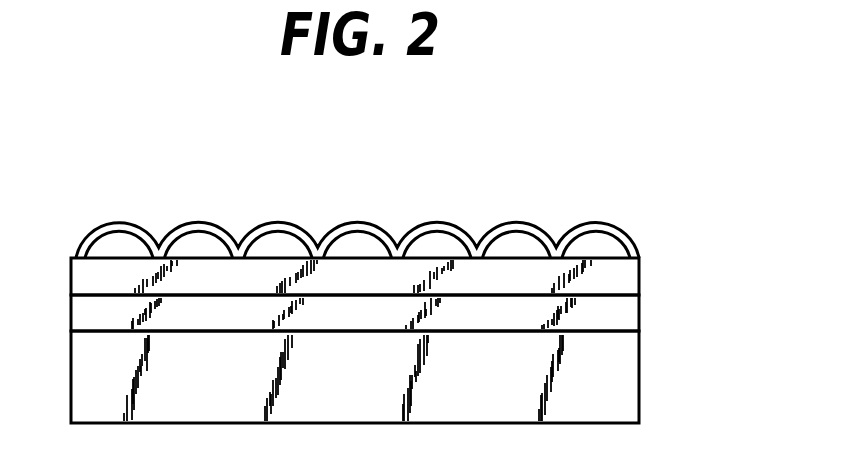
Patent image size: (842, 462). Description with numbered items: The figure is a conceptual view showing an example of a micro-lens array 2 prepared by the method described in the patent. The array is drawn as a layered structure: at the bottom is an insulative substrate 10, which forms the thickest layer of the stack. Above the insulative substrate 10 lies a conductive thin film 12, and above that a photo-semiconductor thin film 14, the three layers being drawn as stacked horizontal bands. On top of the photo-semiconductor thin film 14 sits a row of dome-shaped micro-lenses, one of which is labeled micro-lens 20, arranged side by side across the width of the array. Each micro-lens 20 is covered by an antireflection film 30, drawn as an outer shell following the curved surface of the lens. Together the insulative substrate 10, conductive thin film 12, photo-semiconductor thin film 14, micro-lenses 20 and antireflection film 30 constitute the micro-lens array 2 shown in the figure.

The micro-lens array 2 is at (456, 191).
The insulative substrate 10 is at (628, 369).
The conductive thin film 12 is at (626, 316).
The photo-semiconductor thin film 14 is at (626, 276).
The micro-lens 20 is at (603, 243).
The antireflection film 30 is at (588, 221).